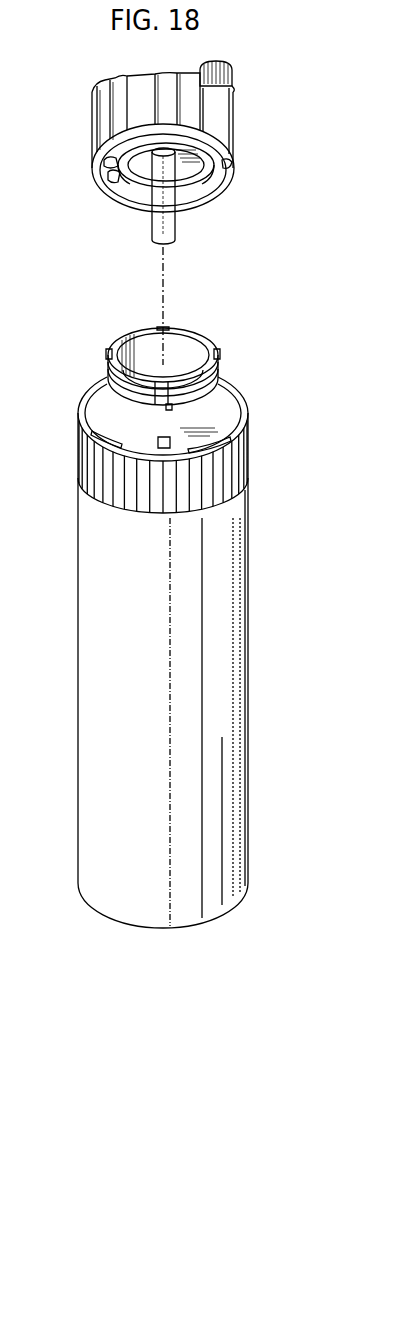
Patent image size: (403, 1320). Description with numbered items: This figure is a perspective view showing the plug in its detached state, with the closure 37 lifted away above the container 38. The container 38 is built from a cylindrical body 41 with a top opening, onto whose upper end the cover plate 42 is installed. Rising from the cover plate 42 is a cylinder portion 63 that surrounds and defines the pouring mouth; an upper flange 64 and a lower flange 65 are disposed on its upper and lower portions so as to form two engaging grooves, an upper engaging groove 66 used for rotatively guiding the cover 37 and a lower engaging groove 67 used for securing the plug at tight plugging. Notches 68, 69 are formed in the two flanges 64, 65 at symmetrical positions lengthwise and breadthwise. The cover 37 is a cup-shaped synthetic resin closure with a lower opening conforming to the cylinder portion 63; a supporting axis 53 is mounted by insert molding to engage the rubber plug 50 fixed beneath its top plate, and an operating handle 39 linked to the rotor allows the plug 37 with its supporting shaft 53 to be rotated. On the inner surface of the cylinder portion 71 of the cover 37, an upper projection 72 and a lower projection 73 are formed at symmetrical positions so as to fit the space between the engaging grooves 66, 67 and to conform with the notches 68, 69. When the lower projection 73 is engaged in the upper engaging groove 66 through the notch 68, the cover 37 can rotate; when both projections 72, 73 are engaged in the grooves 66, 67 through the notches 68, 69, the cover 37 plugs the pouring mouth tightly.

The closure 37 is at (165, 156).
The container 38 is at (151, 646).
The operating handle 39 is at (233, 75).
The cylindrical body 41 is at (35, 457).
The cover plate 42 is at (85, 457).
The rubber plug 50 is at (186, 174).
The supporting axis 53 is at (177, 232).
The cylinder portion 63 is at (164, 424).
The upper flange 64 is at (197, 331).
The lower flange 65 is at (222, 394).
The upper engaging groove 66 is at (176, 404).
The lower engaging groove 67 is at (207, 418).
The notch 68 is at (107, 355).
The notch 69 is at (163, 389).
The cylinder portion 71 is at (237, 118).
The upper projection 72 is at (109, 164).
The lower projection 73 is at (112, 180).